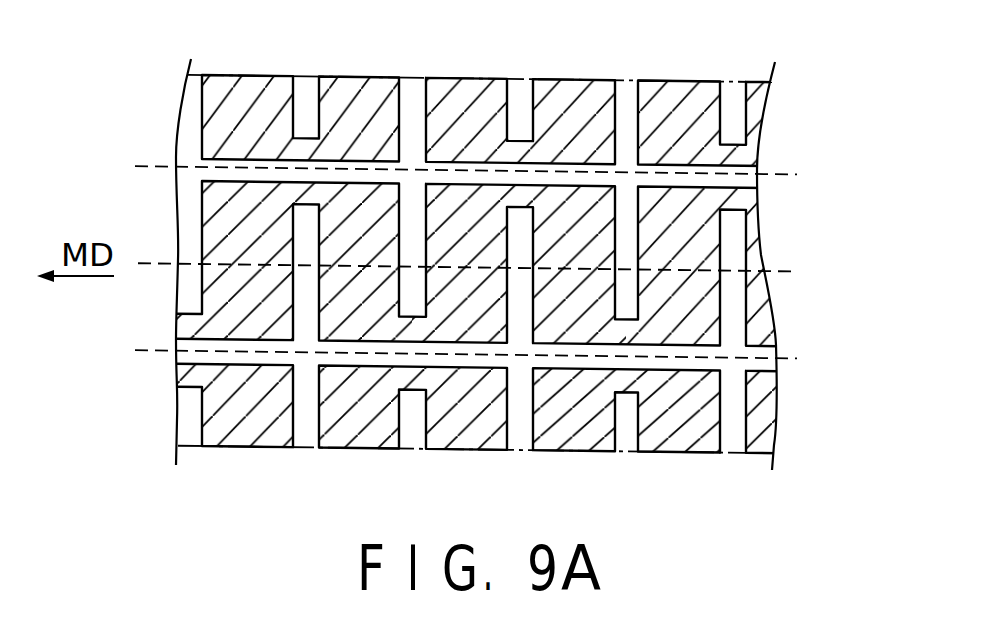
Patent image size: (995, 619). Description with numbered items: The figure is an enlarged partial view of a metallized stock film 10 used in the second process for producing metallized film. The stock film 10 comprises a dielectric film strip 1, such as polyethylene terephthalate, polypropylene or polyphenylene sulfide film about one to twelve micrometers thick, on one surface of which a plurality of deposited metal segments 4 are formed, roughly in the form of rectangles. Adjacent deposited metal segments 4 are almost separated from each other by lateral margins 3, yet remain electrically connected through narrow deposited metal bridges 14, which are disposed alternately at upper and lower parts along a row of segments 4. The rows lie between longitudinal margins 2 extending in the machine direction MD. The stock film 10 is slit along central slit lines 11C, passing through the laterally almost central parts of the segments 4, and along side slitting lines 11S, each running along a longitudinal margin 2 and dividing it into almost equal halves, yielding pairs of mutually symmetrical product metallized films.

The dielectric film strip 1 is at (733, 110).
The longitudinal margins 2 is at (553, 174).
The lateral margins 3 is at (627, 113).
The deposited metal segments 4 is at (258, 313).
The metallized stock film 10 is at (781, 142).
The deposited metal bridges 14 is at (303, 197).
The side slitting lines 11S is at (497, 273).
The central slit lines 11C is at (498, 276).